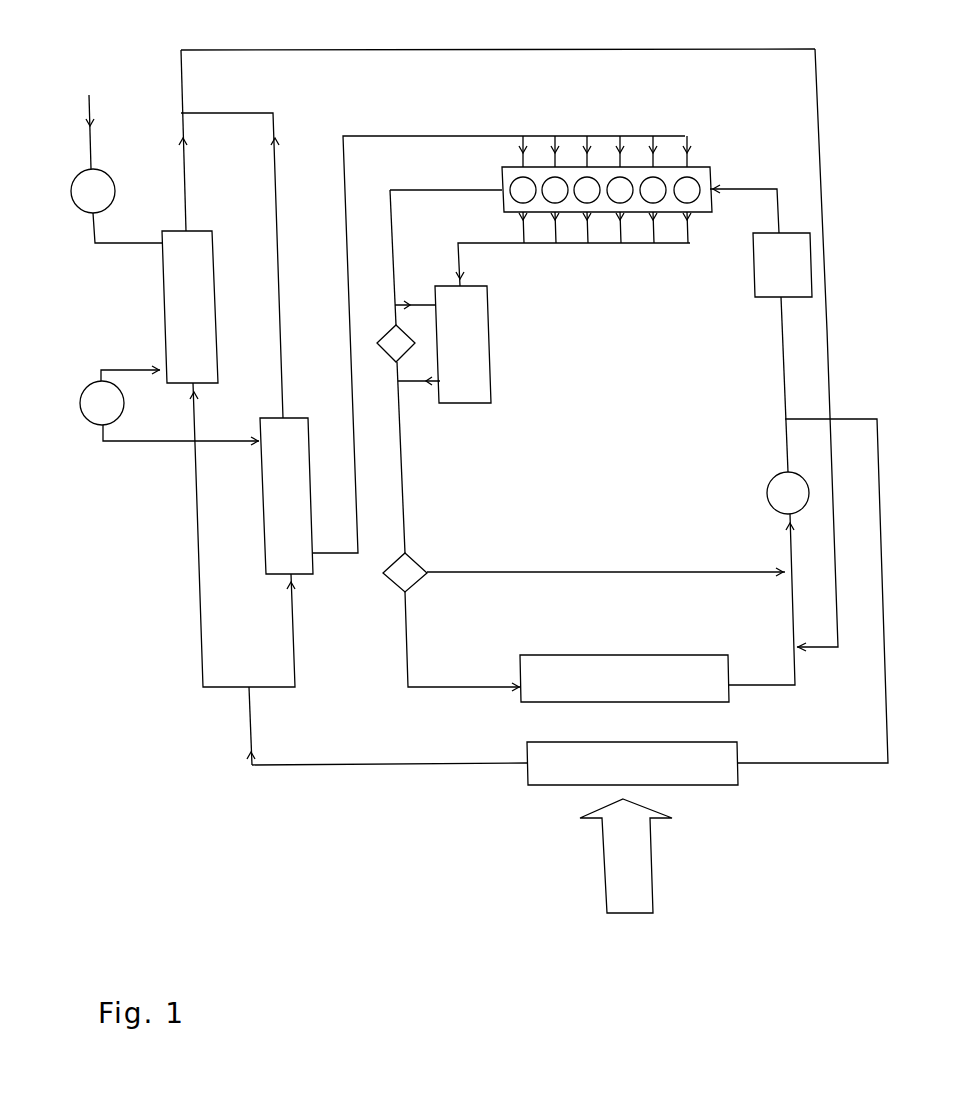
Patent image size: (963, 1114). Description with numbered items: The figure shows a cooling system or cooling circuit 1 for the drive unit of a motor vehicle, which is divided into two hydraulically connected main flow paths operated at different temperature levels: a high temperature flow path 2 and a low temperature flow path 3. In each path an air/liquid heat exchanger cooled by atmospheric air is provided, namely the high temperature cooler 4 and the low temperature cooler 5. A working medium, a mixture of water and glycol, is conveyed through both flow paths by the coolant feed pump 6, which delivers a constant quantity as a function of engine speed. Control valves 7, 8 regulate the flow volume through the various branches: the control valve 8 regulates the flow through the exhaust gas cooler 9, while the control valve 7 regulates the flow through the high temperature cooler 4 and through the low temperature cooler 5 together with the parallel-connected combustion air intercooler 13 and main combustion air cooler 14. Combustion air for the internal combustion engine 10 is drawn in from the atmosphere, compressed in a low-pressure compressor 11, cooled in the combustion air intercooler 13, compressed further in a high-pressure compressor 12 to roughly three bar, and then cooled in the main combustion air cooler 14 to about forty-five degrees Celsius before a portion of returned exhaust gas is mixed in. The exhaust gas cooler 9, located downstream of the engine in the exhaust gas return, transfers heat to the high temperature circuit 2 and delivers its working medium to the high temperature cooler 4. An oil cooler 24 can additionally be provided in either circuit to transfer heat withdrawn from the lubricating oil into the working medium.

The cooling system 1 is at (433, 40).
The high temperature flow path 2 is at (462, 641).
The low temperature flow path 3 is at (389, 732).
The high temperature cooler 4 is at (624, 678).
The low temperature cooler 5 is at (632, 763).
The coolant feed pump 6 is at (744, 493).
The control valve 7 is at (450, 559).
The control valve 8 is at (357, 327).
The exhaust gas cooler 9 is at (463, 344).
The internal combustion engine 10 is at (607, 164).
The low-pressure compressor 11 is at (77, 160).
The high-pressure compressor 12 is at (99, 370).
The combustion air intercooler 13 is at (190, 307).
The main combustion air cooler 14 is at (286, 496).
The oil cooler 24 is at (782, 265).